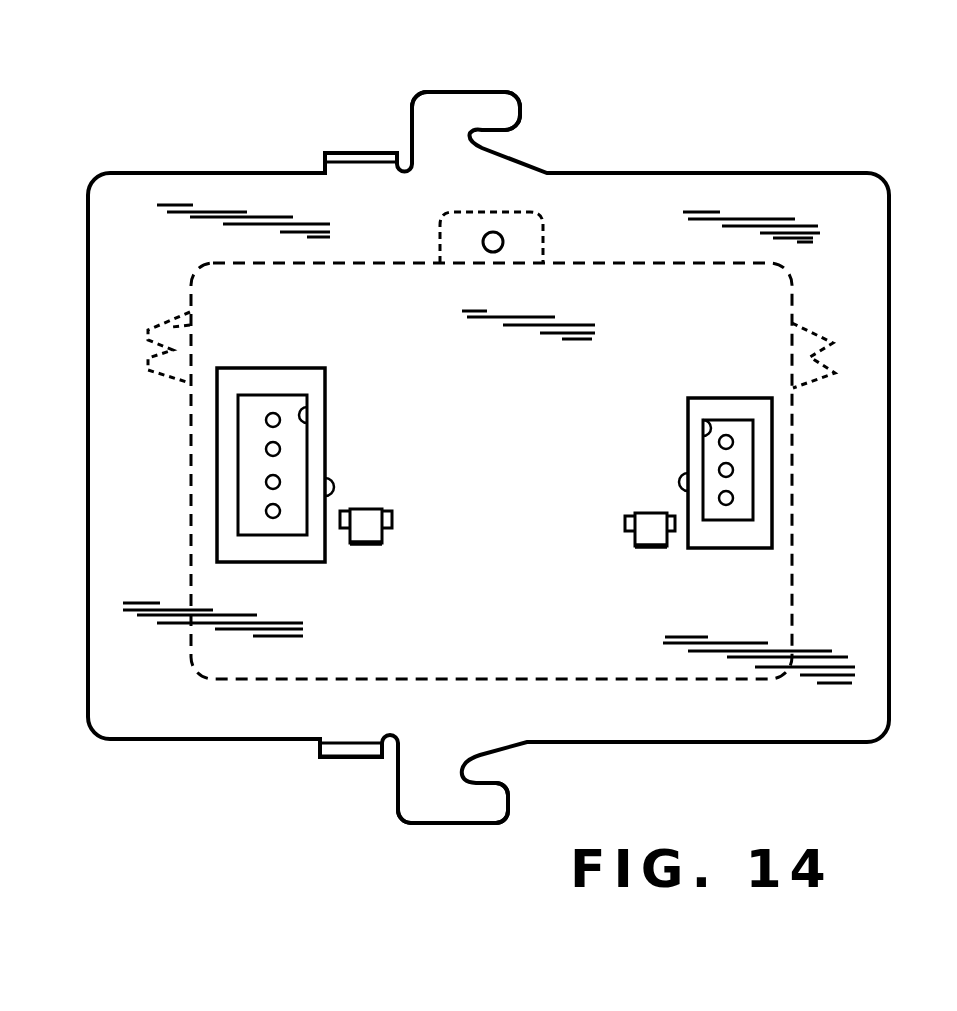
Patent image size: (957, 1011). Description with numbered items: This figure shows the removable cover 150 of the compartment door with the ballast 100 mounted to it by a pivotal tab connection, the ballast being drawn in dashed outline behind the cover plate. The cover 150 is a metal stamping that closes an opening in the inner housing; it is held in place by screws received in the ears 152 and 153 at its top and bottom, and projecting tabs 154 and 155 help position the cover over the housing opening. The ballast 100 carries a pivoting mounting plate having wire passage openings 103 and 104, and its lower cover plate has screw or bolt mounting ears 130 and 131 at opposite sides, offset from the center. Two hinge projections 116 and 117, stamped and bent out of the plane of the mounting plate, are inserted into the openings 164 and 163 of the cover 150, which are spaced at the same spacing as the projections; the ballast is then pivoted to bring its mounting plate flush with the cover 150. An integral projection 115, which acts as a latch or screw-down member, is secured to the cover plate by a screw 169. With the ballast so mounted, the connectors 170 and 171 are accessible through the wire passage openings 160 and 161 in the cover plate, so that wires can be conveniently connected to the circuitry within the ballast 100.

The ballast 100 is at (253, 263).
The wire passage opening 103 is at (697, 410).
The wire passage opening 104 is at (305, 405).
The integral projection 115 is at (538, 203).
The hinge projection 116 is at (657, 548).
The hinge projection 117 is at (368, 546).
The mounting ear 130 is at (192, 322).
The mounting ear 131 is at (792, 340).
The removable cover 150 is at (675, 203).
The ear 152 is at (500, 113).
The ear 153 is at (480, 800).
The projecting tab 154 is at (356, 151).
The projecting tab 155 is at (345, 758).
The wire passage opening 160 is at (322, 487).
The wire passage opening 161 is at (693, 488).
The opening 163 is at (392, 513).
The opening 164 is at (627, 520).
The screw 169 is at (500, 228).
The connector 170 is at (293, 450).
The connector 171 is at (717, 455).